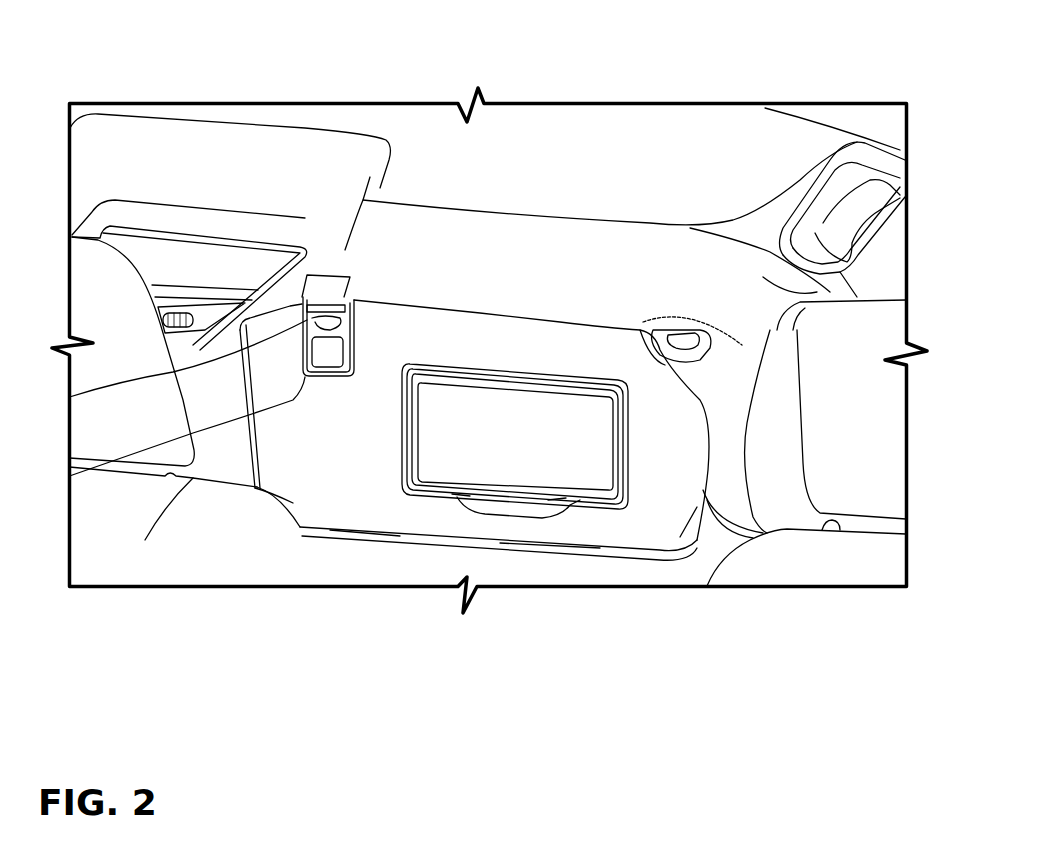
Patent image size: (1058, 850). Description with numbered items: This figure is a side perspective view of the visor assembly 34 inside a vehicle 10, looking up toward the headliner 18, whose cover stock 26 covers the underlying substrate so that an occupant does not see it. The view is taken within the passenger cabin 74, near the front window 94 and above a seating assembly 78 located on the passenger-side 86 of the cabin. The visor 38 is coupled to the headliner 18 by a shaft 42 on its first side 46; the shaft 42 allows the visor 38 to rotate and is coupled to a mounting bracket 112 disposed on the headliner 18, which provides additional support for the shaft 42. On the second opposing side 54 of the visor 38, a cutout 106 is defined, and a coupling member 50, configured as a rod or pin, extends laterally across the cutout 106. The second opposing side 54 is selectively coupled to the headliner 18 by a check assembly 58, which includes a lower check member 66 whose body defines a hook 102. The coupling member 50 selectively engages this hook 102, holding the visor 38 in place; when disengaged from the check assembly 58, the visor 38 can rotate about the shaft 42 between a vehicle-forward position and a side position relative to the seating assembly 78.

The vehicle 10 is at (765, 92).
The headliner 18 is at (424, 222).
The cover stock 26 is at (850, 272).
The visor assembly 34 is at (553, 561).
The visor 38 is at (535, 533).
The shaft 42 is at (665, 335).
The first side 46 is at (680, 537).
The coupling member 50 is at (238, 327).
The second opposing side 54 is at (293, 483).
The check assembly 58 is at (348, 267).
The lower check member 66 is at (298, 283).
The passenger cabin 74 is at (127, 142).
The seating assembly 78 is at (145, 540).
The passenger-side 86 is at (763, 570).
The front window 94 is at (365, 555).
The hook 102 is at (245, 365).
The cutout 106 is at (195, 440).
The mounting bracket 112 is at (698, 318).